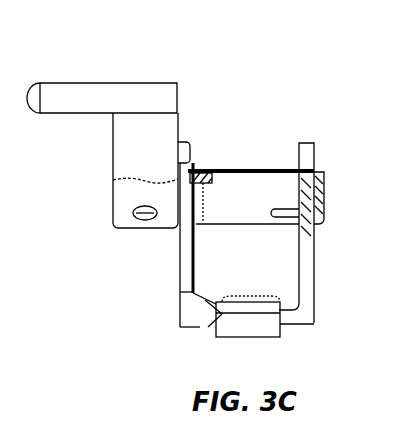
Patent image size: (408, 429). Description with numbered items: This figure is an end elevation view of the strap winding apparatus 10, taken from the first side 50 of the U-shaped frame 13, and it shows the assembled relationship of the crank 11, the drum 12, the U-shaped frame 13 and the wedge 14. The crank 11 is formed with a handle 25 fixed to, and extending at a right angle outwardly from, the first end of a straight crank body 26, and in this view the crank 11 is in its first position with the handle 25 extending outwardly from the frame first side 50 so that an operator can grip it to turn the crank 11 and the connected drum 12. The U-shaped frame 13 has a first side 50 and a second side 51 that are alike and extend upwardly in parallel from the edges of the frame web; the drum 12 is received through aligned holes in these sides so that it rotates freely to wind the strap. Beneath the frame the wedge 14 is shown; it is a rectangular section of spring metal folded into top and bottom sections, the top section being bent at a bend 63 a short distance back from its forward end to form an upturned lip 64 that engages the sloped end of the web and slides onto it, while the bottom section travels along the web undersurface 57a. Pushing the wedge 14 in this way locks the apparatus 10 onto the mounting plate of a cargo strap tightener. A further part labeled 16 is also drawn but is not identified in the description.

The strap winding apparatus 10 is at (282, 133).
The crank 11 is at (102, 157).
The drum 12 is at (222, 150).
The U-shaped frame 13 is at (322, 255).
The wedge 14 is at (260, 341).
The fastener 16 is at (205, 340).
The handle 25 is at (80, 98).
The crank body 26 is at (162, 157).
The first side 50 is at (179, 262).
The second side 51 is at (314, 290).
The web undersurface 57a is at (198, 338).
The bend 63 is at (203, 303).
The upturned lip 64 is at (242, 302).